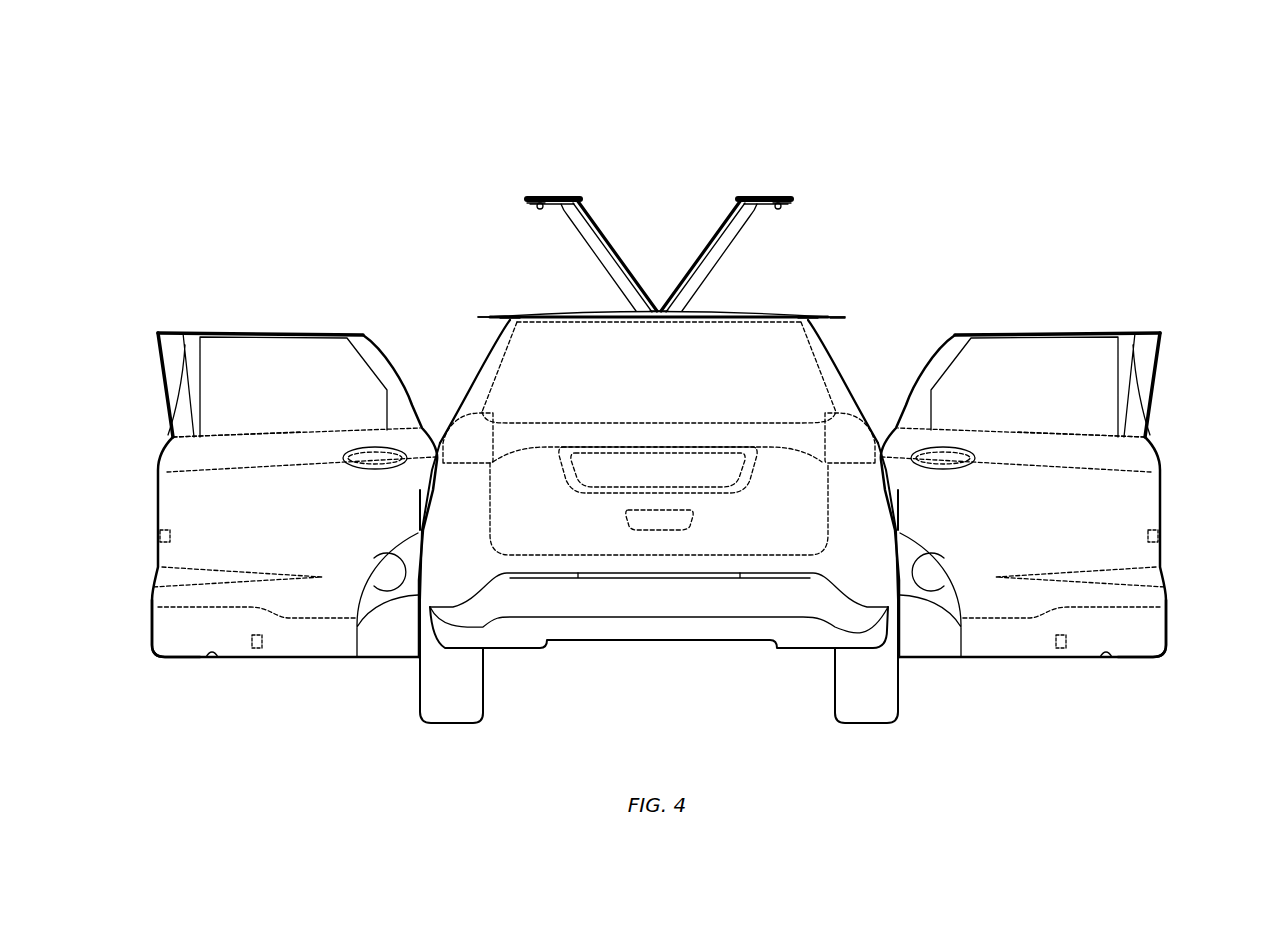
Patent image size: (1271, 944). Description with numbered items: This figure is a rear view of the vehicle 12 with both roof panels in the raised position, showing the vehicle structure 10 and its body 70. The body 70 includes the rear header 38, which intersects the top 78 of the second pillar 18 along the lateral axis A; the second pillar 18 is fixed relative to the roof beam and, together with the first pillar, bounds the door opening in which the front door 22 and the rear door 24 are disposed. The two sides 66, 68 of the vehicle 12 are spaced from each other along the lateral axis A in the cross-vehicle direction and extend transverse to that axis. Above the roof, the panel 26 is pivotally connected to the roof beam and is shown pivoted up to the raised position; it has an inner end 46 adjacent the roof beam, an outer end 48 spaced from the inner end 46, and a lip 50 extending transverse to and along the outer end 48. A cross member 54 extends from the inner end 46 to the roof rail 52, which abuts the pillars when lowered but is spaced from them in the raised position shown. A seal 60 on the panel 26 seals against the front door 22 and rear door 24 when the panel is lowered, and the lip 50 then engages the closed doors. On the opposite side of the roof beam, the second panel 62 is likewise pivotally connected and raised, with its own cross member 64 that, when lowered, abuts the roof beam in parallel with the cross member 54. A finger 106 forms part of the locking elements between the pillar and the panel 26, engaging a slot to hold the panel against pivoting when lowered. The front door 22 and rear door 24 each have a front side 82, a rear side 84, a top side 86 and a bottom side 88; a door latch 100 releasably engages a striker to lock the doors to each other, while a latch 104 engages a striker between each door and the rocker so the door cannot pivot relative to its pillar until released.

The vehicle structure 10 is at (533, 655).
The vehicle 12 is at (777, 98).
The second pillar 18 is at (458, 389).
The front door 22 is at (156, 333).
The rear door 24 is at (150, 648).
The panel 26 is at (606, 228).
The rear header 38 is at (657, 327).
The inner end 46 is at (659, 304).
The outer end 48 is at (569, 197).
The lip 50 is at (555, 193).
The roof rail 52 is at (555, 205).
The cross member 54 is at (604, 264).
The seal 60 is at (527, 200).
The second panel 62 is at (710, 228).
The cross member 64 is at (714, 264).
The side 66 is at (421, 305).
The side 68 is at (898, 305).
The body 70 is at (773, 645).
The top 78 is at (508, 313).
The front side 82 is at (158, 506).
The rear side 84 is at (420, 495).
The top side 86 is at (293, 437).
The bottom side 88 is at (208, 657).
The door latch 100 is at (172, 536).
The latch 104 is at (258, 650).
The finger 106 is at (539, 210).
The lateral axis A is at (840, 317).